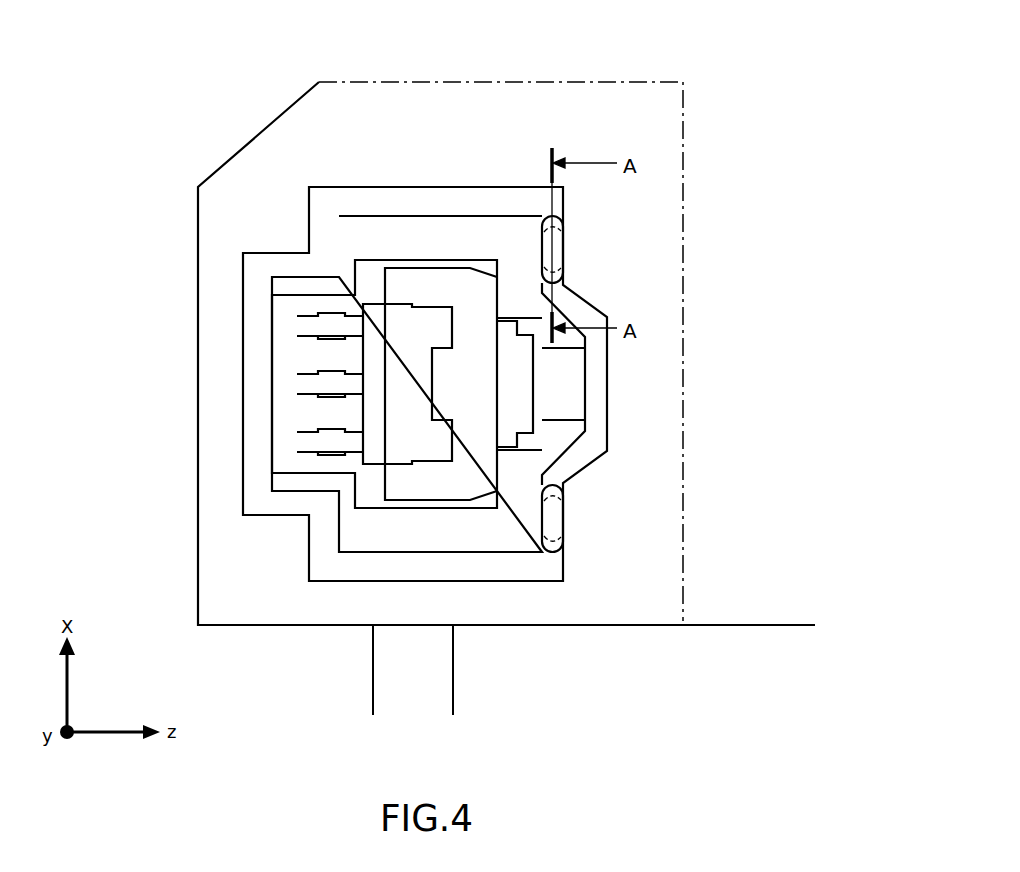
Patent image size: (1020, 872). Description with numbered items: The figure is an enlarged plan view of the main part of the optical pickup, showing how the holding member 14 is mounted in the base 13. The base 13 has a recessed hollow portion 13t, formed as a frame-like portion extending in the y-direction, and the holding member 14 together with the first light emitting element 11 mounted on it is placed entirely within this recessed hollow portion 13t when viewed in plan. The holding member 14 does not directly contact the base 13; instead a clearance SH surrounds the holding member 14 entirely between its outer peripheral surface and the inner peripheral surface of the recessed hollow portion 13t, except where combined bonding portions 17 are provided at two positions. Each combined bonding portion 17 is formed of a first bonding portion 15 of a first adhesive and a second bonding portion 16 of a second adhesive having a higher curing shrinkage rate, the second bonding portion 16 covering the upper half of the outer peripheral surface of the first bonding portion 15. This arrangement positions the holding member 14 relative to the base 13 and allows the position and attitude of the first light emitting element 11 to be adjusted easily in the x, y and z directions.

The first light emitting element 11 is at (380, 355).
The base 13 is at (198, 232).
The recessed hollow portion 13t is at (360, 187).
The holding member 14 is at (442, 235).
The first bonding portion 15 is at (552, 252).
The second bonding portion 16 is at (562, 218).
The combined bonding portion 17 is at (740, 198).
The clearance SH is at (260, 437).